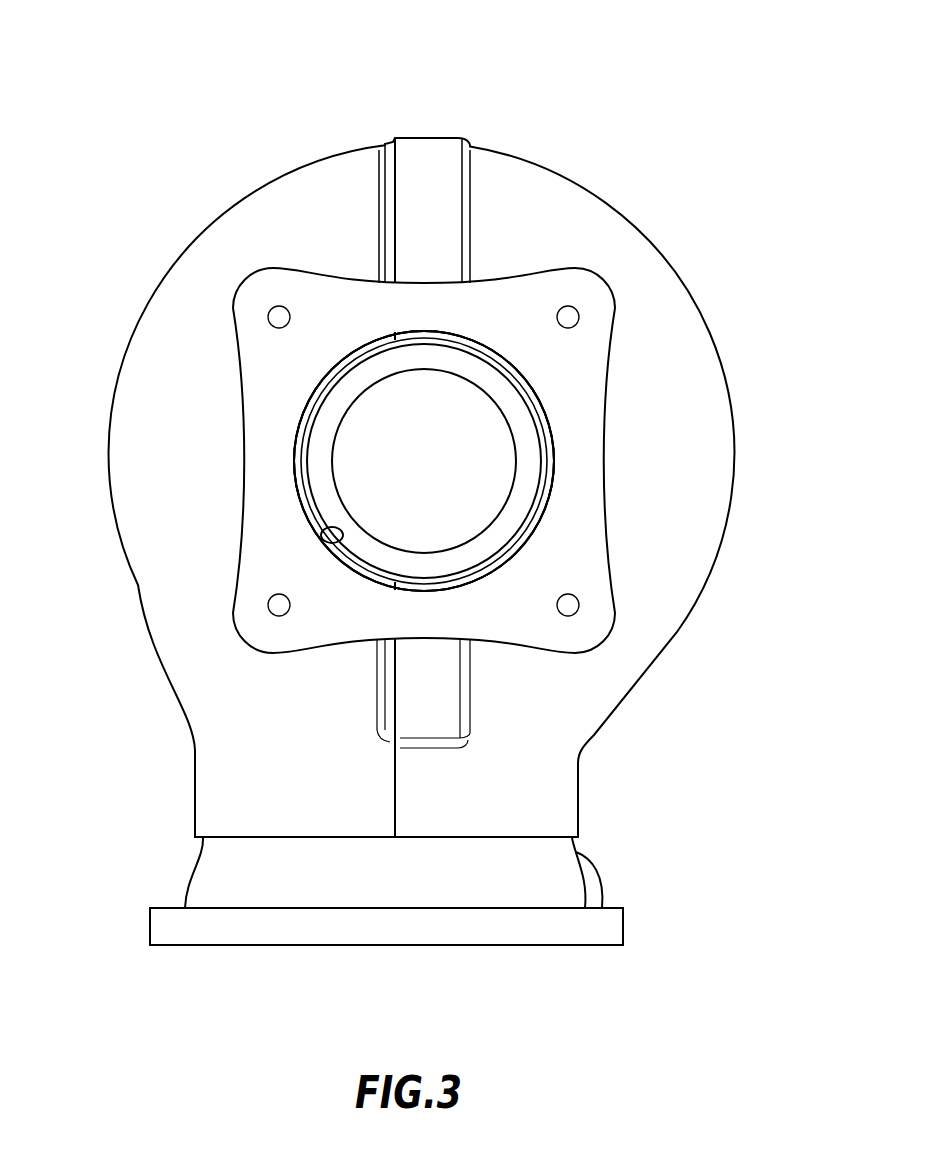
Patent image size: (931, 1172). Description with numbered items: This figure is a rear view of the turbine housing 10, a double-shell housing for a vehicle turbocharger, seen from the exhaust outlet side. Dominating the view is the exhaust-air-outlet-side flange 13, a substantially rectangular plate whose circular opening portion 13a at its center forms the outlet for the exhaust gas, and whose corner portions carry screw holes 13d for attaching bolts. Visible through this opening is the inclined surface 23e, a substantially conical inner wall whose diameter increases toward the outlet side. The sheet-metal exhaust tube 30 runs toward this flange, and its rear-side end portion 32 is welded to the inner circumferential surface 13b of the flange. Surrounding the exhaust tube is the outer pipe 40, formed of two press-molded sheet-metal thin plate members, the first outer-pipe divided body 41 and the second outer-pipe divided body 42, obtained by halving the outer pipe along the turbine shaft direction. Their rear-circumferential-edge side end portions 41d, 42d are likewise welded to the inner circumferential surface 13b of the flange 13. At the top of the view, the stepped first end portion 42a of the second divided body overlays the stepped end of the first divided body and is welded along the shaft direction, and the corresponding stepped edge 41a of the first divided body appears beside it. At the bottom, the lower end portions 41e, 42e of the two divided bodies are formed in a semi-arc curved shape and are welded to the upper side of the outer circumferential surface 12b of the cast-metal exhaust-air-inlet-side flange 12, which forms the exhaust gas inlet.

The turbine housing 10 is at (431, 85).
The exhaust-air-inlet-side flange 12 is at (358, 945).
The outer circumferential surface 12b is at (432, 848).
The exhaust-air-outlet-side flange 13 is at (246, 511).
The circular opening portion 13a is at (332, 548).
The inner circumferential surface 13b is at (195, 559).
The screw holes 13d is at (268, 318).
The inclined surface 23e is at (525, 425).
The exhaust tube 30 is at (424, 461).
The rear-side end portion 32 is at (537, 507).
The outer pipe 40 is at (446, 214).
The first outer-pipe divided body 41 is at (200, 236).
The first housing rib 41a is at (385, 143).
The rear-circumferential-edge side end portion 41d is at (300, 455).
The lower end portion 41e is at (265, 822).
The second outer-pipe divided body 42 is at (609, 207).
The first end portion 42a is at (455, 138).
The rear-circumferential-edge side end portion 42d is at (553, 465).
The lower end portion 42e is at (522, 840).